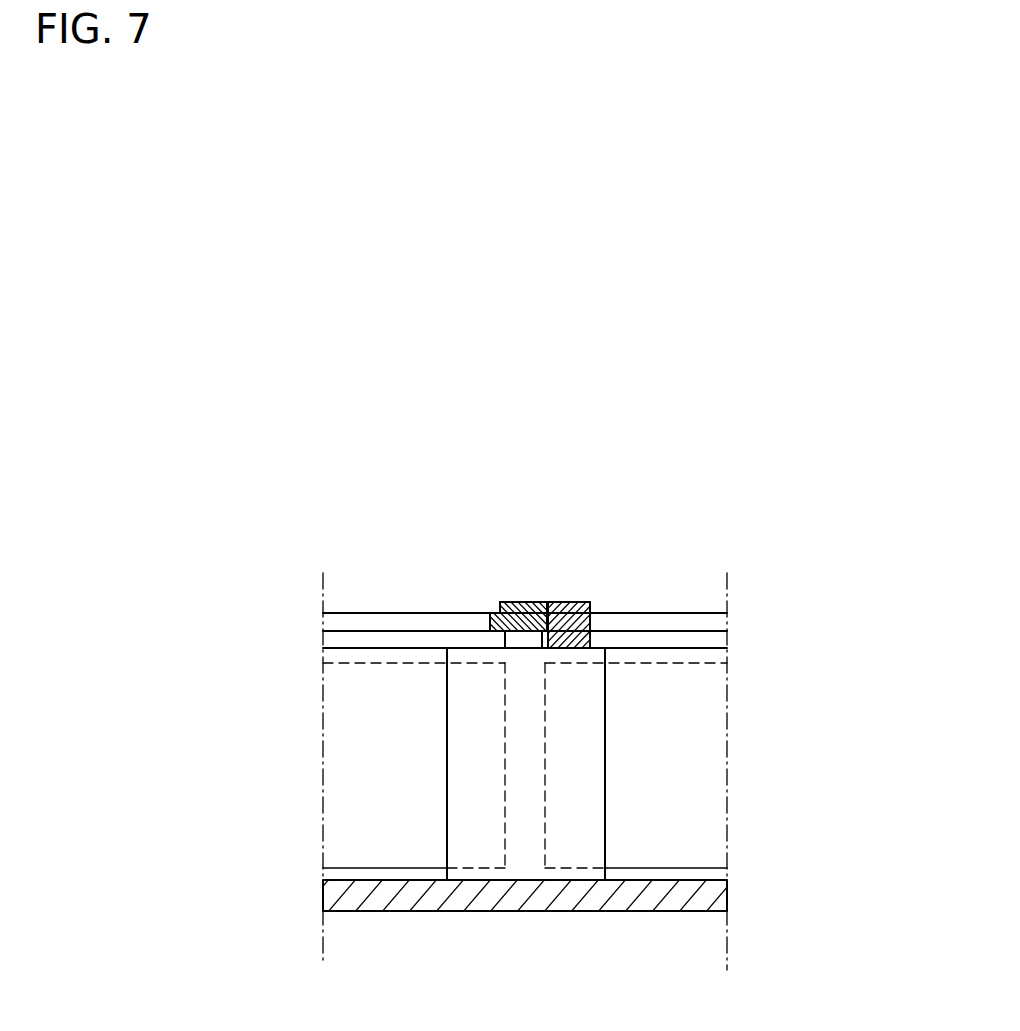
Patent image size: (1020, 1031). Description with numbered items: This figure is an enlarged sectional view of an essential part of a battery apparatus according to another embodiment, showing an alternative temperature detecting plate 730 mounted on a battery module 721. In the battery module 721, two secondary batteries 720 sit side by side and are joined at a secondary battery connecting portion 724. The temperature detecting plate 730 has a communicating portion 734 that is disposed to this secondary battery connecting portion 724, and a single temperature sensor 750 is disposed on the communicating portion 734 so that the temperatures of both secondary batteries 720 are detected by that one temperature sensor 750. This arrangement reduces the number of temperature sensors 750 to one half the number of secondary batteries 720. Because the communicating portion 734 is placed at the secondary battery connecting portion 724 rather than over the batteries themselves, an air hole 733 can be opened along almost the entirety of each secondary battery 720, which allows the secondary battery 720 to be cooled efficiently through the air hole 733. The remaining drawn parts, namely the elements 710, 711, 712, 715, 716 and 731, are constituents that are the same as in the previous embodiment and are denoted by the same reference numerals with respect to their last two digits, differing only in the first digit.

The substrate 710 is at (820, 758).
The first substrate layer 711 is at (718, 640).
The second substrate layer 712 is at (715, 897).
The insulating layer 715 is at (360, 648).
The electrode 716 is at (535, 602).
The secondary battery 720 is at (415, 828).
The battery module 721 is at (360, 737).
The secondary battery connecting portion 724 is at (528, 863).
The temperature detecting plate 730 is at (602, 558).
The electrode layer 731 is at (645, 612).
The air hole 733 is at (362, 611).
The communicating portion 734 is at (486, 614).
The temperature sensor 750 is at (521, 652).